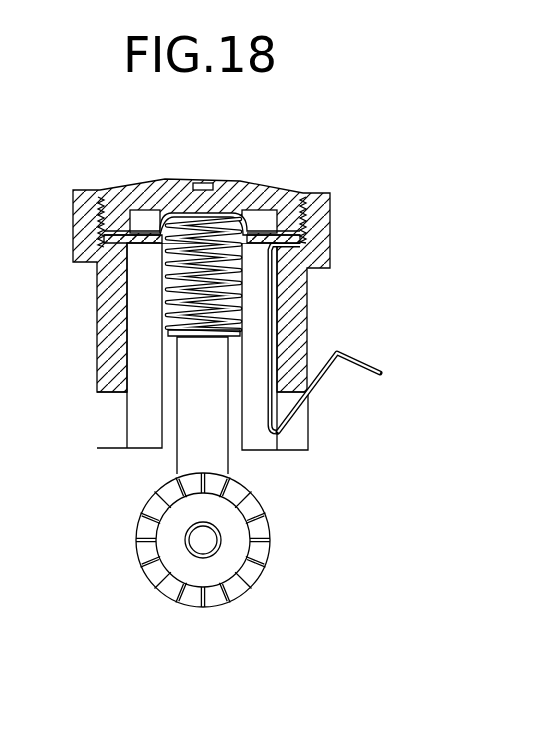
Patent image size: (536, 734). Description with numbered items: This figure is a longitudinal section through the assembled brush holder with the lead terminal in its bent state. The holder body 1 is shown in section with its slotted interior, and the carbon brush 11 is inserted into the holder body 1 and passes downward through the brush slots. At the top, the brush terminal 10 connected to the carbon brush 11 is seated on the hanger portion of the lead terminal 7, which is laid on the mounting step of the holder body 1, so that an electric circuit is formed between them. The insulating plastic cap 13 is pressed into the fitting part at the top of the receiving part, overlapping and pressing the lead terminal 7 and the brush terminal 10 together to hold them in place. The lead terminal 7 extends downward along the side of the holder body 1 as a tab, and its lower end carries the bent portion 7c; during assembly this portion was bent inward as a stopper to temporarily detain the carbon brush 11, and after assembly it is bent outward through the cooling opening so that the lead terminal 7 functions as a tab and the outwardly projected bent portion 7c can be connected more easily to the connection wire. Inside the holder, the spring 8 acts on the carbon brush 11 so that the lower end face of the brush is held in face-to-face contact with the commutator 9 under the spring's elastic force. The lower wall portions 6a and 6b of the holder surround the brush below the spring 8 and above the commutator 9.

The holder body 1 is at (110, 303).
The plastic cap 13 is at (257, 196).
The brush terminal 10 is at (145, 230).
The spring 8 is at (172, 300).
The cylinder wall (left) 6a is at (110, 423).
The cylinder wall (right) 6b is at (293, 437).
The lead terminal 7 is at (276, 283).
The inwardly bent portion 7c is at (350, 364).
The carbon brush 11 is at (190, 440).
The commutator 9 is at (155, 568).